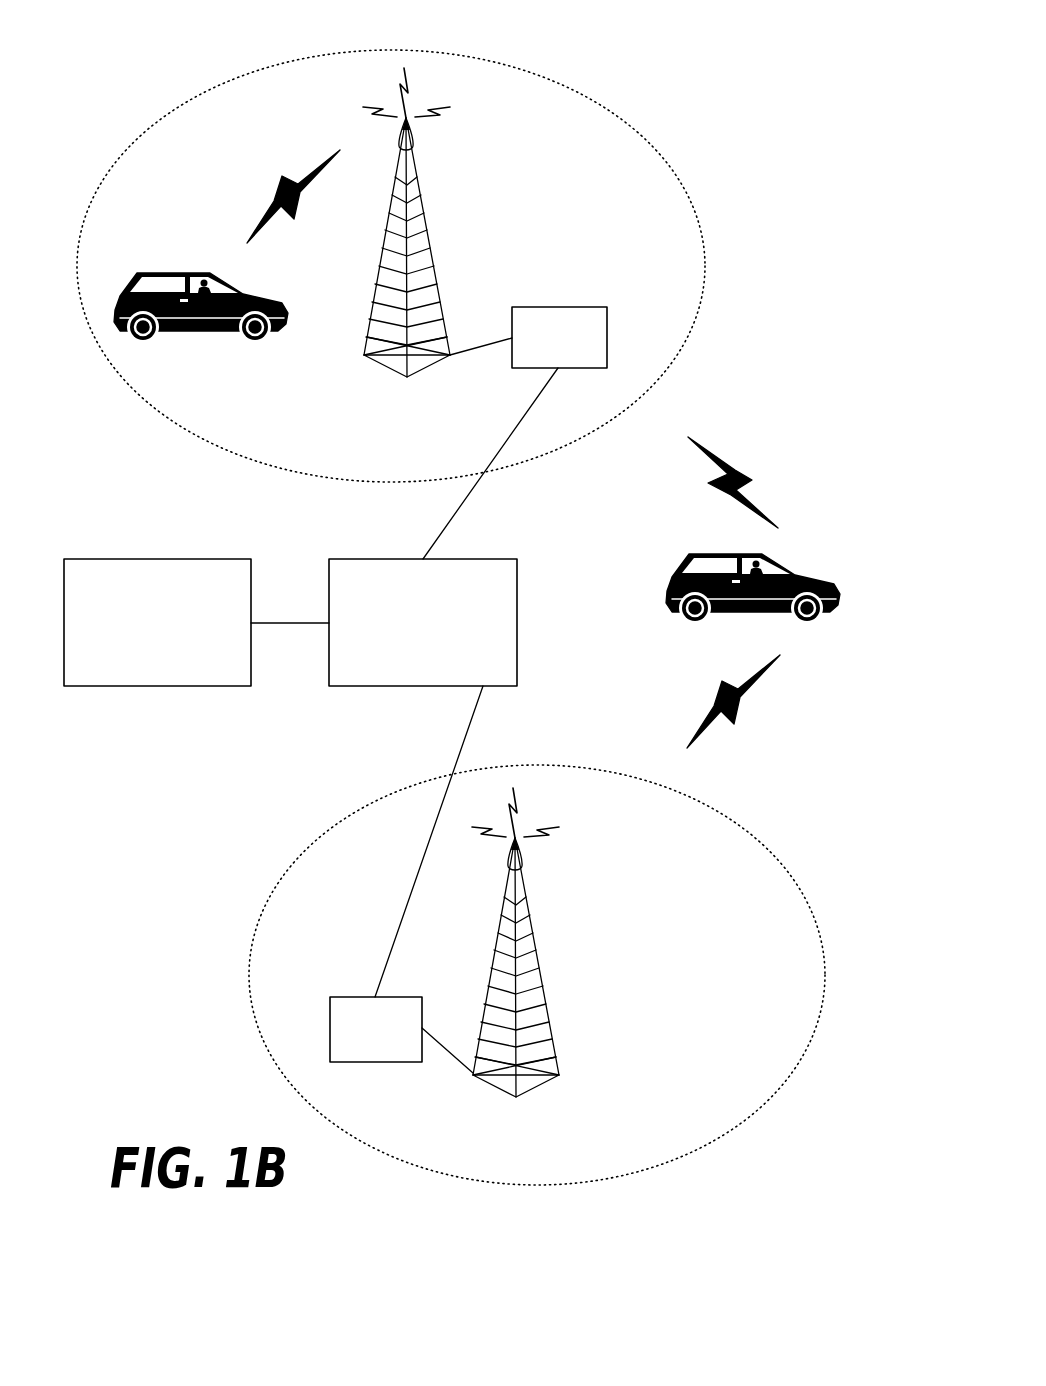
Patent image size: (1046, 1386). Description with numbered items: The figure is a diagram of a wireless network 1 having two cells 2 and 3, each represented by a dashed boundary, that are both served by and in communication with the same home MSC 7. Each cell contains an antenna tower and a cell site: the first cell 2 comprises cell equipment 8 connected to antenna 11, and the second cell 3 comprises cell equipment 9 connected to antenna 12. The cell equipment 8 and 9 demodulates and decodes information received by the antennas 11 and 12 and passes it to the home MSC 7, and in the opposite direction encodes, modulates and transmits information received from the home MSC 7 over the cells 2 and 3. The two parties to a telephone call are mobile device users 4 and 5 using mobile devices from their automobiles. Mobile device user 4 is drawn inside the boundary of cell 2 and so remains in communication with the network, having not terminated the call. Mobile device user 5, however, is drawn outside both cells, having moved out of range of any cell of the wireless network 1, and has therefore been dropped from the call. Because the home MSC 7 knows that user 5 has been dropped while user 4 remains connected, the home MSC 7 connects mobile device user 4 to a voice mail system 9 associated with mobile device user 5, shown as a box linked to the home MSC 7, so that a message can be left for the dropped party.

The wireless network 1 is at (738, 77).
The cell 2 is at (498, 65).
The cell 3 is at (717, 807).
The mobile device user 4 is at (170, 245).
The mobile device user 5 is at (716, 528).
The home MSC 7 is at (416, 647).
The cell equipment 8 is at (528, 307).
The cell equipment / voice mail system 9 is at (150, 672).
The antenna 11 is at (438, 195).
The antenna 12 is at (547, 935).